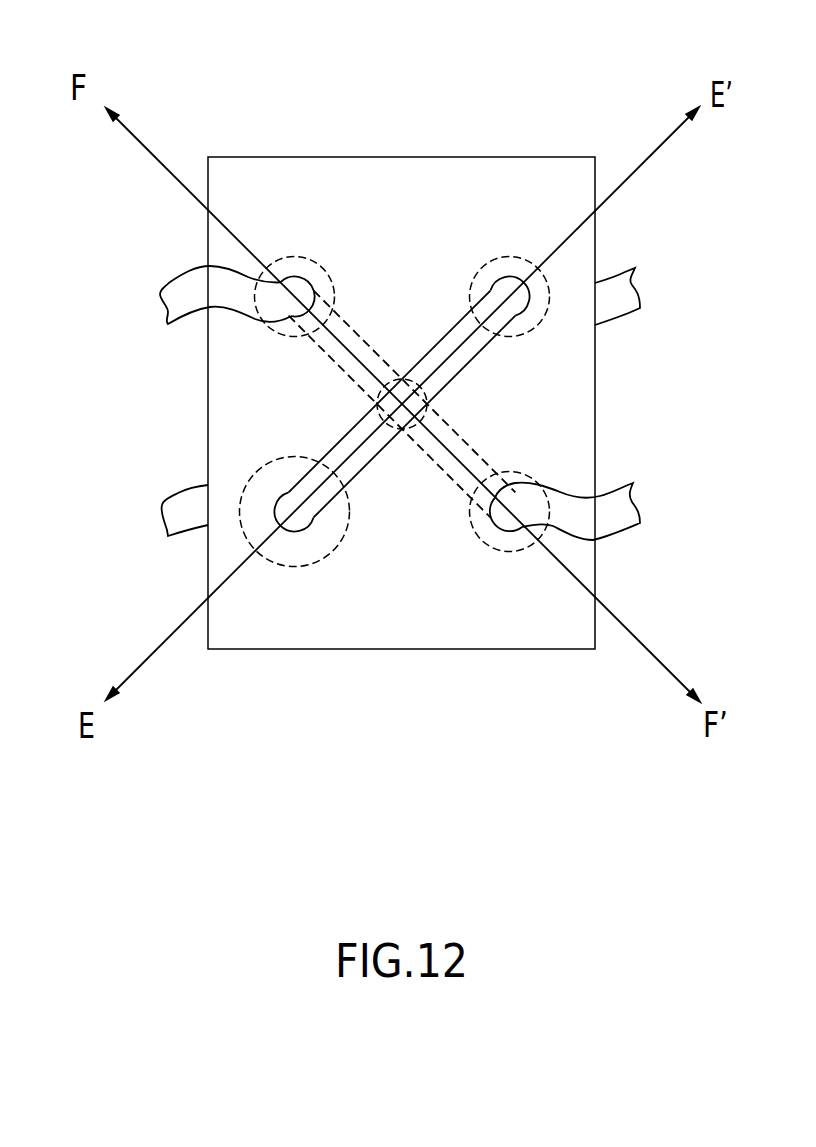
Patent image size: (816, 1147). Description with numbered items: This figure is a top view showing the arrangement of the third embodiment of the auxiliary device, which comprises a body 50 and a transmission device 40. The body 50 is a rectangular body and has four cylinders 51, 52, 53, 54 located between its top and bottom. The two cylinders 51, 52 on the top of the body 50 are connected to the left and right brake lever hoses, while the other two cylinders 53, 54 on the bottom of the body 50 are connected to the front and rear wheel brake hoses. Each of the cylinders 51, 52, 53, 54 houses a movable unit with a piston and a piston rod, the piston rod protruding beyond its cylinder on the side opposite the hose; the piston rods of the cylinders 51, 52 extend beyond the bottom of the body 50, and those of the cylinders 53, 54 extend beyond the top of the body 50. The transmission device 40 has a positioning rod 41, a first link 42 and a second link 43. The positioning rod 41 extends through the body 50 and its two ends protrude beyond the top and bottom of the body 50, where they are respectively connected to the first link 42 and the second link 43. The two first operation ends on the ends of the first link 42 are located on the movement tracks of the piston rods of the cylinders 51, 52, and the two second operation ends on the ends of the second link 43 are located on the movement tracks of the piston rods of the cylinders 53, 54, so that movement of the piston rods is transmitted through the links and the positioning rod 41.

The transmission device 40 is at (418, 528).
The positioning rod 41 is at (396, 429).
The first link 42 is at (457, 432).
The second link 43 is at (343, 437).
The body 50 is at (565, 157).
The cylinder 51 is at (510, 552).
The cylinder 52 is at (295, 256).
The cylinder 53 is at (509, 256).
The cylinder 54 is at (295, 567).